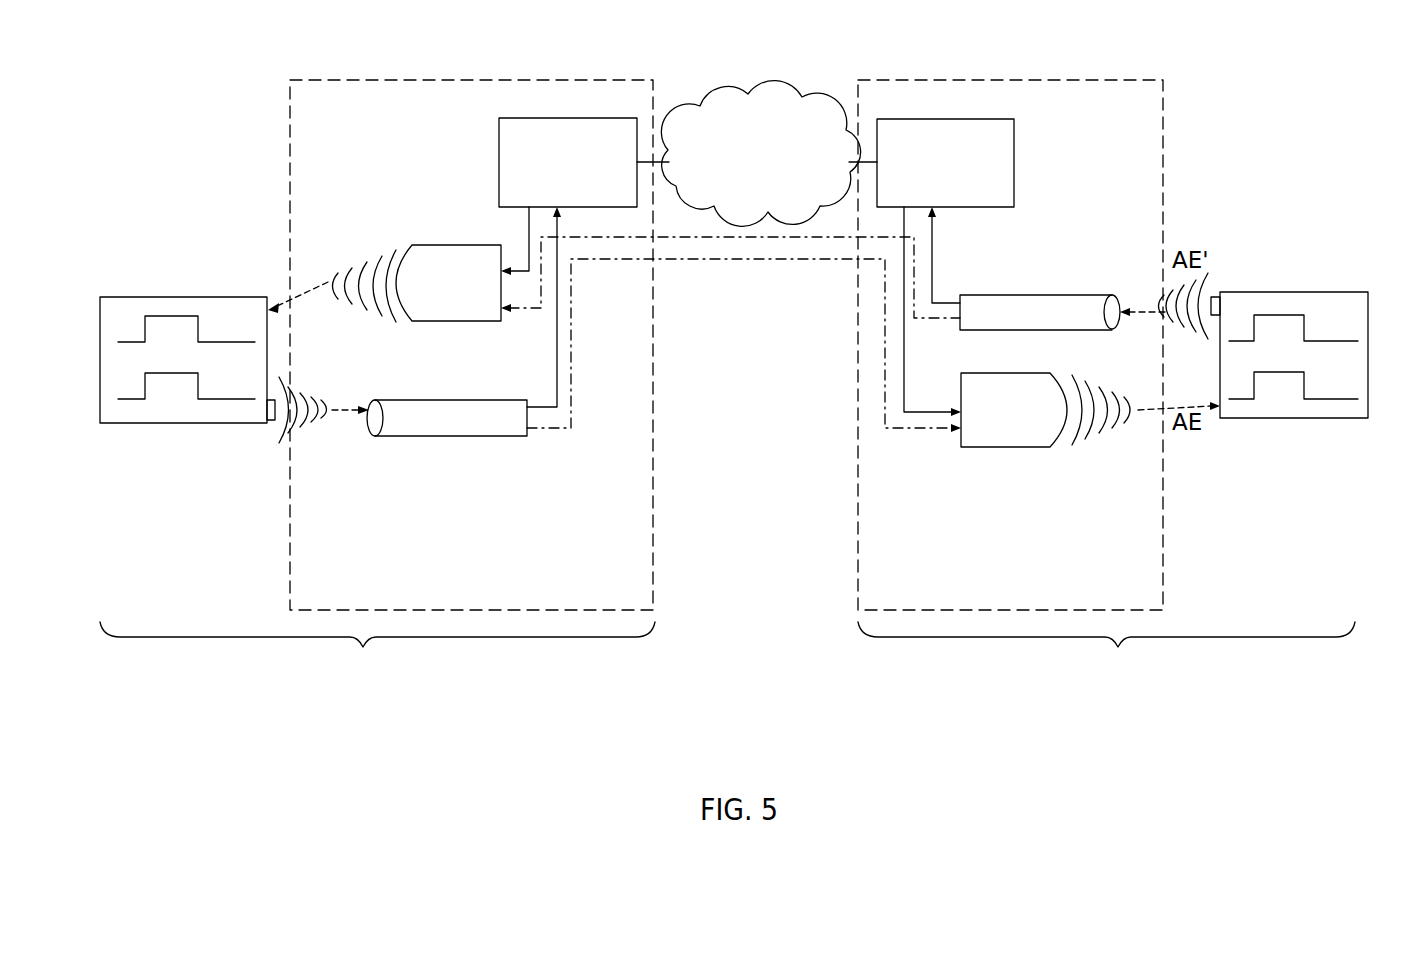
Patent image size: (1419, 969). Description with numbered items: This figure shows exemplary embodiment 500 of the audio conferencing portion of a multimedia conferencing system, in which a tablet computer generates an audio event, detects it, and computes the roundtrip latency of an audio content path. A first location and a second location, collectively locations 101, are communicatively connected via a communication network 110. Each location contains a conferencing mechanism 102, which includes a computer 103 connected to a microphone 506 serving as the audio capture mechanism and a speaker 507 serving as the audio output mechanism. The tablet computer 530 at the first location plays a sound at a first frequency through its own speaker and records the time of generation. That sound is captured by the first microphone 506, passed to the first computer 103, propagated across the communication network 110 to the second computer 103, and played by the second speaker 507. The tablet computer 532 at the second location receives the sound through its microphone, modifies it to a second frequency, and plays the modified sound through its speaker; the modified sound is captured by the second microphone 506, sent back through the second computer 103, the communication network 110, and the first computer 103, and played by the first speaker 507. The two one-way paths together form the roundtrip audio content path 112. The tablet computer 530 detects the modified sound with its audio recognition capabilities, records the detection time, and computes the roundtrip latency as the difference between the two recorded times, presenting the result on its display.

The exemplary embodiment 500 is at (1360, 77).
The tablet computer 530 is at (176, 296).
The tablet computer 532 is at (1290, 292).
The speakers 507 is at (1009, 478).
The microphones 506 is at (453, 437).
The computer 103 is at (962, 188).
The communication network 110 is at (737, 199).
The roundtrip audio content path 112 is at (810, 238).
The conferencing mechanism 102 is at (1050, 594).
The location 101 is at (727, 654).